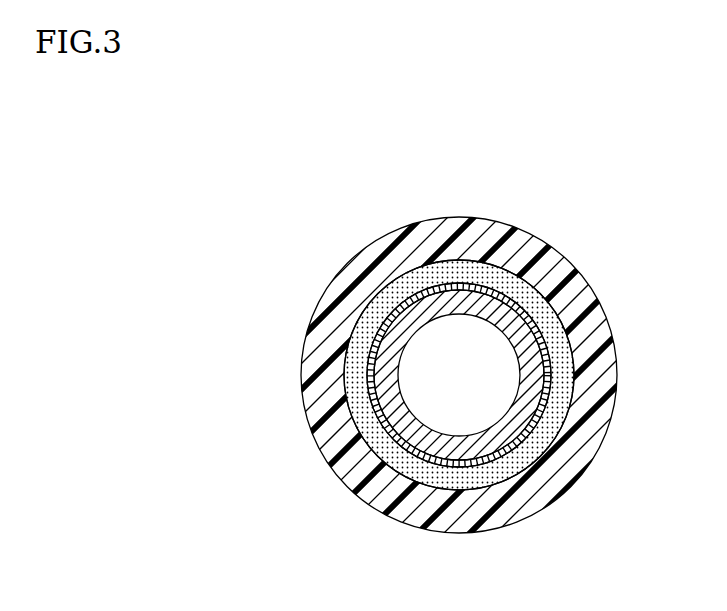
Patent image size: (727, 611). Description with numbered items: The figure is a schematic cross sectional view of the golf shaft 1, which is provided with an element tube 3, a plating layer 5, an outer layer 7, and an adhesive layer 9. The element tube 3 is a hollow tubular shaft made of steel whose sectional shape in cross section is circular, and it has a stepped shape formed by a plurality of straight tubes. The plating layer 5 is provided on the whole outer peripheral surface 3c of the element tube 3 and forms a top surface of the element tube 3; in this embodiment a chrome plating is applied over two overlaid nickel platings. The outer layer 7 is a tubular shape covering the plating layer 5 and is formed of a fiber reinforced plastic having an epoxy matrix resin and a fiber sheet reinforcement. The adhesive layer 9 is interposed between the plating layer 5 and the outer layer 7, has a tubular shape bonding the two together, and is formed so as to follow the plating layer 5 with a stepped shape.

The golf shaft 1 is at (513, 208).
The element tube 3 is at (452, 229).
The outer peripheral surface 3c is at (360, 323).
The outer layer 7 is at (578, 264).
The adhesive layer 9 is at (548, 352).
The plating layer 5 is at (545, 400).